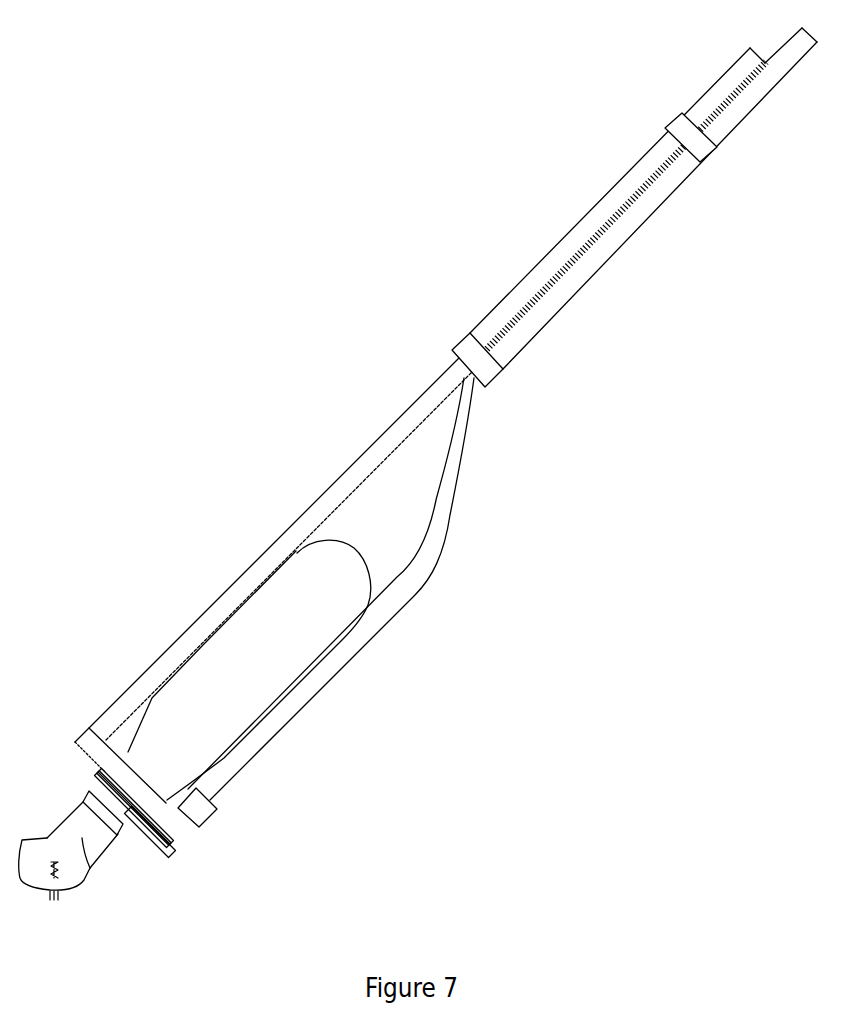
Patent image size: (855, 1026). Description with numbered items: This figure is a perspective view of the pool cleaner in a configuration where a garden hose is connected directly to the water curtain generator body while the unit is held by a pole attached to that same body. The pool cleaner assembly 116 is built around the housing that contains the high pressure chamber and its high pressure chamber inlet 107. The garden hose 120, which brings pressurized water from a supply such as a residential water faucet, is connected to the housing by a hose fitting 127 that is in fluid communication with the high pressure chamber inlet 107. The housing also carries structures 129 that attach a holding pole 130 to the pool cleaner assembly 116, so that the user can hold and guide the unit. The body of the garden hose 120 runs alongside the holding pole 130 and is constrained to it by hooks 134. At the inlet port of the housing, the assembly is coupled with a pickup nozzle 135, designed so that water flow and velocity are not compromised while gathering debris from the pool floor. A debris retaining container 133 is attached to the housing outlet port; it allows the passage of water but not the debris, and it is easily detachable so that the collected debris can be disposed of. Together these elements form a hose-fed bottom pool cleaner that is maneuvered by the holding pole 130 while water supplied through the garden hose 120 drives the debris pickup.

The high pressure chamber inlet 107 is at (182, 827).
The pool cleaner assembly 116 is at (112, 792).
The garden hose 120 is at (458, 453).
The hose fitting 127 is at (210, 812).
The structures 129 is at (90, 742).
The holding pole 130 is at (405, 408).
The debris retaining container 133 is at (265, 660).
The hooks 134 is at (700, 163).
The pickup nozzle 135 is at (42, 852).